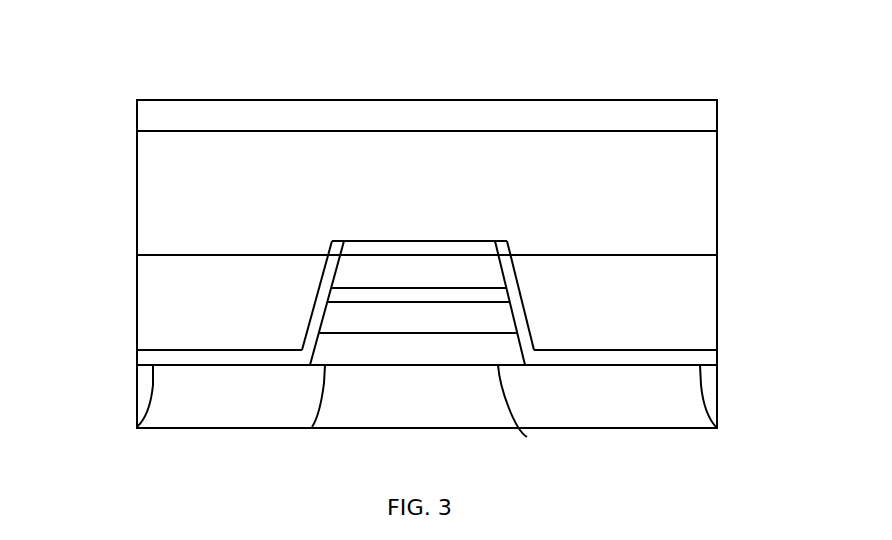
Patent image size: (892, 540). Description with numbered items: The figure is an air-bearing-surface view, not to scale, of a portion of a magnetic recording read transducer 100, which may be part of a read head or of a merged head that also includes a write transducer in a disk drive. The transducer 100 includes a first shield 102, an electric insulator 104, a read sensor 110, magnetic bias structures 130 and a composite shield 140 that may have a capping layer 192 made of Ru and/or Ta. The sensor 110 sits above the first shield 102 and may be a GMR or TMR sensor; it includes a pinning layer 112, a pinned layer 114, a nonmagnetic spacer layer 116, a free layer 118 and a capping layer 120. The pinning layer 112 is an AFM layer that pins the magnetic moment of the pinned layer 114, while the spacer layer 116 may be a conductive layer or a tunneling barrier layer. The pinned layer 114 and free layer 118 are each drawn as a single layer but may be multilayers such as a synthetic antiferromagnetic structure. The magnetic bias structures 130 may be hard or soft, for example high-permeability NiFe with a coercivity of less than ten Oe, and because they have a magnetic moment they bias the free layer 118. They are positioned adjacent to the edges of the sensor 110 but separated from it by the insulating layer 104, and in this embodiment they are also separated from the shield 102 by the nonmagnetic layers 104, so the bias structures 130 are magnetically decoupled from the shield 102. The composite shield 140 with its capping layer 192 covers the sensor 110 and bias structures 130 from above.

The magnetic recording read transducer 100 is at (440, 64).
The first shield 102 is at (355, 428).
The electric insulator 104 is at (137, 427).
The read sensor 110 is at (482, 374).
The pinning layer 112 is at (312, 427).
The pinned layer 114 is at (527, 437).
The nonmagnetic spacer layer 116 is at (508, 295).
The free layer 118 is at (325, 272).
The capping layer 120 is at (467, 241).
The magnetic bias structures 130 is at (137, 318).
The composite shield 140 is at (137, 157).
The capping layer 192 is at (717, 101).